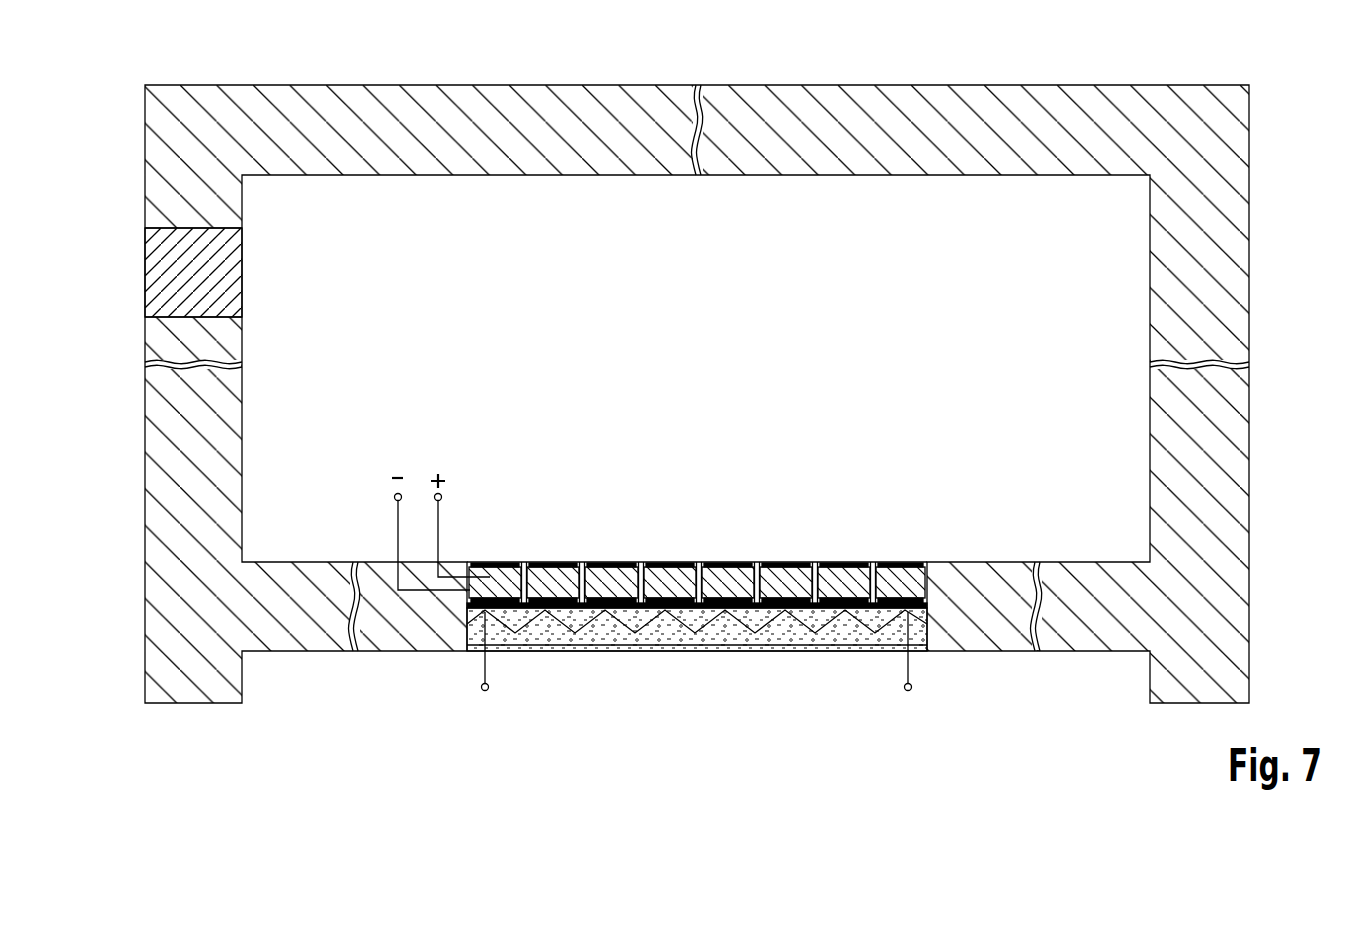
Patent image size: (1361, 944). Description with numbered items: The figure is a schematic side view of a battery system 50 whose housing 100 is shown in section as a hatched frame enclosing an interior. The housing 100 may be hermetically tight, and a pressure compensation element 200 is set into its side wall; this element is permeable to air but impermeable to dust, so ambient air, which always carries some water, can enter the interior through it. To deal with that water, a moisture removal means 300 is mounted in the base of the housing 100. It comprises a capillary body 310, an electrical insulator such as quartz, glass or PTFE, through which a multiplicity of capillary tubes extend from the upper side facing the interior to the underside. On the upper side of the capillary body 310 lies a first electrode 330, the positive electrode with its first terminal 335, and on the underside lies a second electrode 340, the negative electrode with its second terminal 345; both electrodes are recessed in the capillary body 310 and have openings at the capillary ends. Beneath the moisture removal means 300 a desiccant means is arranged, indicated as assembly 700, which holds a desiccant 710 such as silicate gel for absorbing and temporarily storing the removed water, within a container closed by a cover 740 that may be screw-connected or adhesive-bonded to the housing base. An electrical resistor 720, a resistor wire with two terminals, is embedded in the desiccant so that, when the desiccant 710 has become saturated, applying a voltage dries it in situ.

The battery system 50 is at (716, 51).
The housing 100 is at (236, 85).
The pressure compensation element 200 is at (163, 268).
The moisture removal means 300 is at (697, 534).
The capillary body 310 is at (660, 562).
The first electrode 330 is at (668, 562).
The first terminal 335 is at (441, 498).
The second electrode 340 is at (672, 605).
The second terminal 345 is at (394, 497).
The cooling device 700 is at (658, 588).
The desiccant 710 is at (845, 630).
The electrical resistor 720 is at (740, 625).
The cover 740 is at (797, 650).